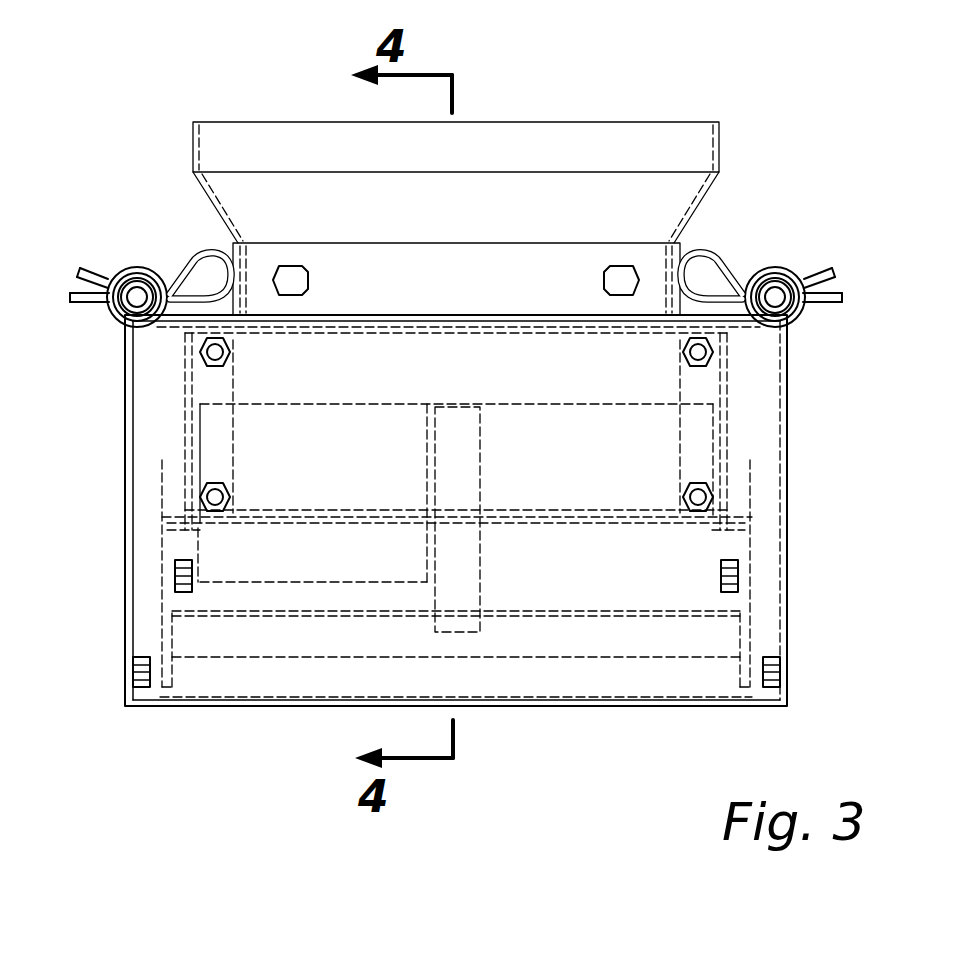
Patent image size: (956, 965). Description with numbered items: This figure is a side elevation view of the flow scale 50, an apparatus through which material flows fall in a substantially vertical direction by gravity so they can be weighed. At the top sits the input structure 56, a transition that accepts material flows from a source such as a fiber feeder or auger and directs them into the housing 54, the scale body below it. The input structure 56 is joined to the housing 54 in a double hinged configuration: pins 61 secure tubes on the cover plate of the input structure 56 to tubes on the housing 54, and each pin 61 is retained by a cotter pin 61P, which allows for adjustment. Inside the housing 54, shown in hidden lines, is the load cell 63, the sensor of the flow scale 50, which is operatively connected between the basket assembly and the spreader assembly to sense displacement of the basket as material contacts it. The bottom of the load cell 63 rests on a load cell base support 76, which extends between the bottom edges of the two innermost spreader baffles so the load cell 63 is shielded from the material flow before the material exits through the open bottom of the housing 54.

The flow scale 50 is at (632, 55).
The input structure 56 is at (188, 132).
The pin 61 is at (136, 292).
The cotter pin 61P is at (201, 247).
The housing 54 is at (146, 372).
The load cell 63 is at (333, 405).
The load cell base support 76 is at (215, 585).